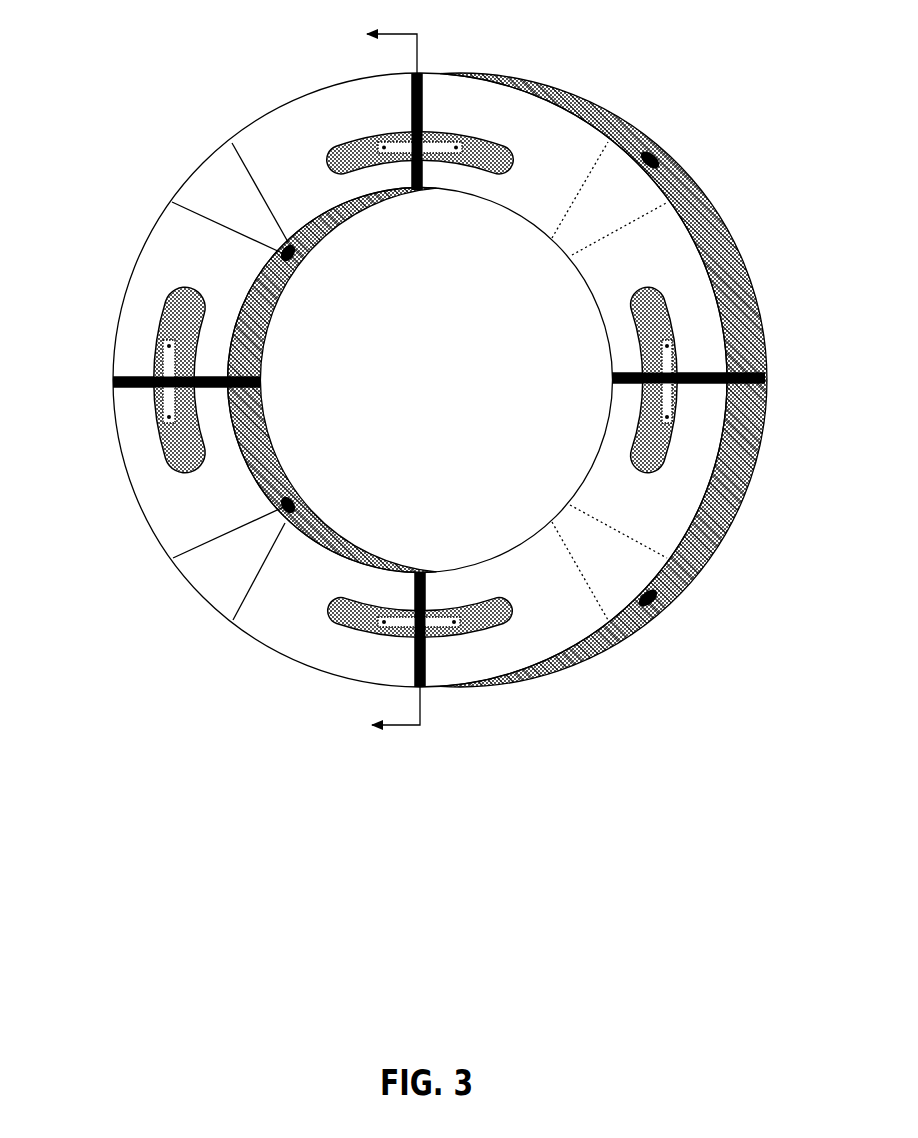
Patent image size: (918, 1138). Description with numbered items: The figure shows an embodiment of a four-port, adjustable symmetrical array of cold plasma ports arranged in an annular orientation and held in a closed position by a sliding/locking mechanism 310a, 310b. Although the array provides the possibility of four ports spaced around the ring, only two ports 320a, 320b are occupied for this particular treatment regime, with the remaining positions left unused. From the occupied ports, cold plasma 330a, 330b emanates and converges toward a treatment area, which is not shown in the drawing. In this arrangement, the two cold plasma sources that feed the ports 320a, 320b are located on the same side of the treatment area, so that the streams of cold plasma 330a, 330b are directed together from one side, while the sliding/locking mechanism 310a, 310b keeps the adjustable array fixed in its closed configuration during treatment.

The sliding/locking mechanism 310a is at (525, 158).
The sliding/locking mechanism 310b is at (677, 287).
The port 320a is at (232, 558).
The port 320b is at (225, 195).
The cold plasma 330a is at (300, 493).
The cold plasma 330b is at (300, 265).